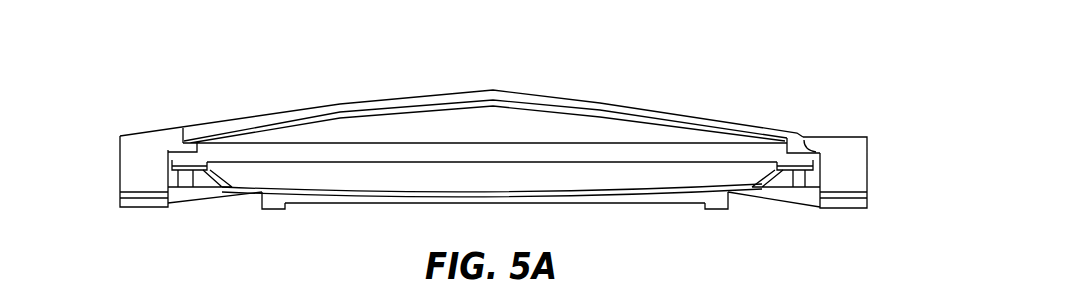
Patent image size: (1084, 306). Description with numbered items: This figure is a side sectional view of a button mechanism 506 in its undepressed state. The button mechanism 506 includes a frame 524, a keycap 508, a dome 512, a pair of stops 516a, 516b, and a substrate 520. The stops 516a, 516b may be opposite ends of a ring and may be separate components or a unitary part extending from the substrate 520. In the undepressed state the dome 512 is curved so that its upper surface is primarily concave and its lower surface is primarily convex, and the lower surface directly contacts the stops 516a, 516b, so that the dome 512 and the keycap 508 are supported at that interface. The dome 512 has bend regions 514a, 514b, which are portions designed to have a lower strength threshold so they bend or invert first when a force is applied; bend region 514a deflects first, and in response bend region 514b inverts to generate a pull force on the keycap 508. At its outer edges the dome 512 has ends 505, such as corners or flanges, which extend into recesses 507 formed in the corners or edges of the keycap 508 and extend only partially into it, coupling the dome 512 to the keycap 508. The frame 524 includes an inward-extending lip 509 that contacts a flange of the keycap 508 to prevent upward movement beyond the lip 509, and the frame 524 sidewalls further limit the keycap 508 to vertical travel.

The ends 505 is at (176, 172).
The button mechanism 506 is at (841, 84).
The recesses 507 is at (166, 152).
The keycap 508 is at (522, 122).
The lip 509 is at (193, 133).
The dome 512 is at (320, 186).
The bend region 514a is at (732, 186).
The bend region 514b is at (223, 186).
The stop 516a is at (713, 193).
The stop 516b is at (275, 193).
The substrate 520 is at (494, 204).
The frame 524 is at (855, 168).